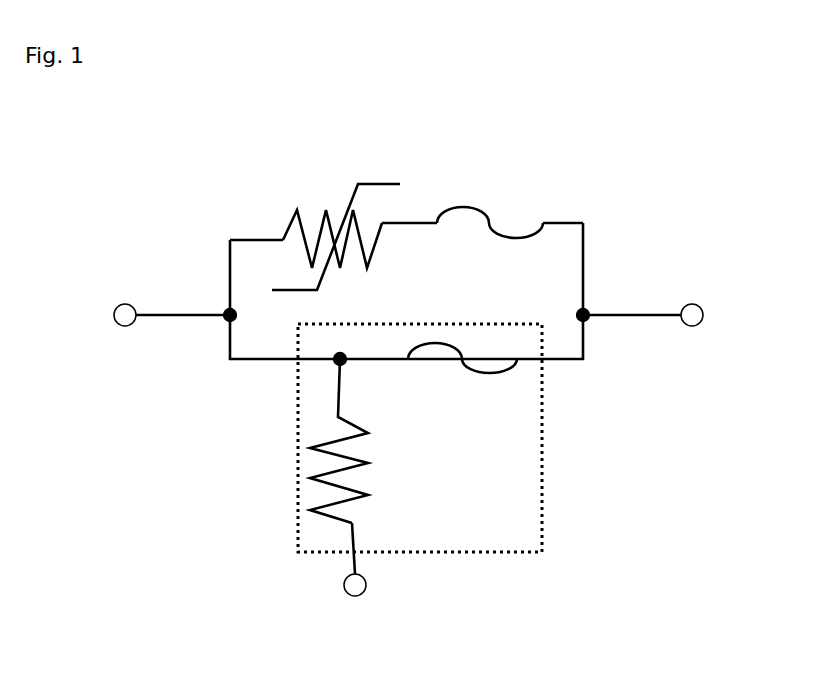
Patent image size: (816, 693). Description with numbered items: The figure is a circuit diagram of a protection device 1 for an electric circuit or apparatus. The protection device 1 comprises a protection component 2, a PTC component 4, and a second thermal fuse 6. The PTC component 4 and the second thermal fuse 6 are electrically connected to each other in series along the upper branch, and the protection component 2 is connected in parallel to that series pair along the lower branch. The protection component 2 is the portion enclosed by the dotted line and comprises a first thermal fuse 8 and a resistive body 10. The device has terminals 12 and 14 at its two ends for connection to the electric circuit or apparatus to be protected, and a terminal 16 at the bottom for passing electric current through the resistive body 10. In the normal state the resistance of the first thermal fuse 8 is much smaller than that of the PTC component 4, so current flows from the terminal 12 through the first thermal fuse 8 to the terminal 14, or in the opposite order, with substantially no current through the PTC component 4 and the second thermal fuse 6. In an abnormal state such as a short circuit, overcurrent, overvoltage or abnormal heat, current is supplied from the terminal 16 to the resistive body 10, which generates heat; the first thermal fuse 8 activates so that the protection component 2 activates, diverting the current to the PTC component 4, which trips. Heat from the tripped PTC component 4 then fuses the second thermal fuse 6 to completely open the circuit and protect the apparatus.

The protection device 1 is at (172, 203).
The protection component 2 is at (436, 438).
The PTC component 4 is at (336, 219).
The second thermal fuse 6 is at (490, 197).
The first thermal fuse 8 is at (462, 376).
The resistive body 10 is at (362, 441).
The terminal 12 is at (664, 313).
The terminal 14 is at (150, 313).
The terminal 16 is at (353, 577).